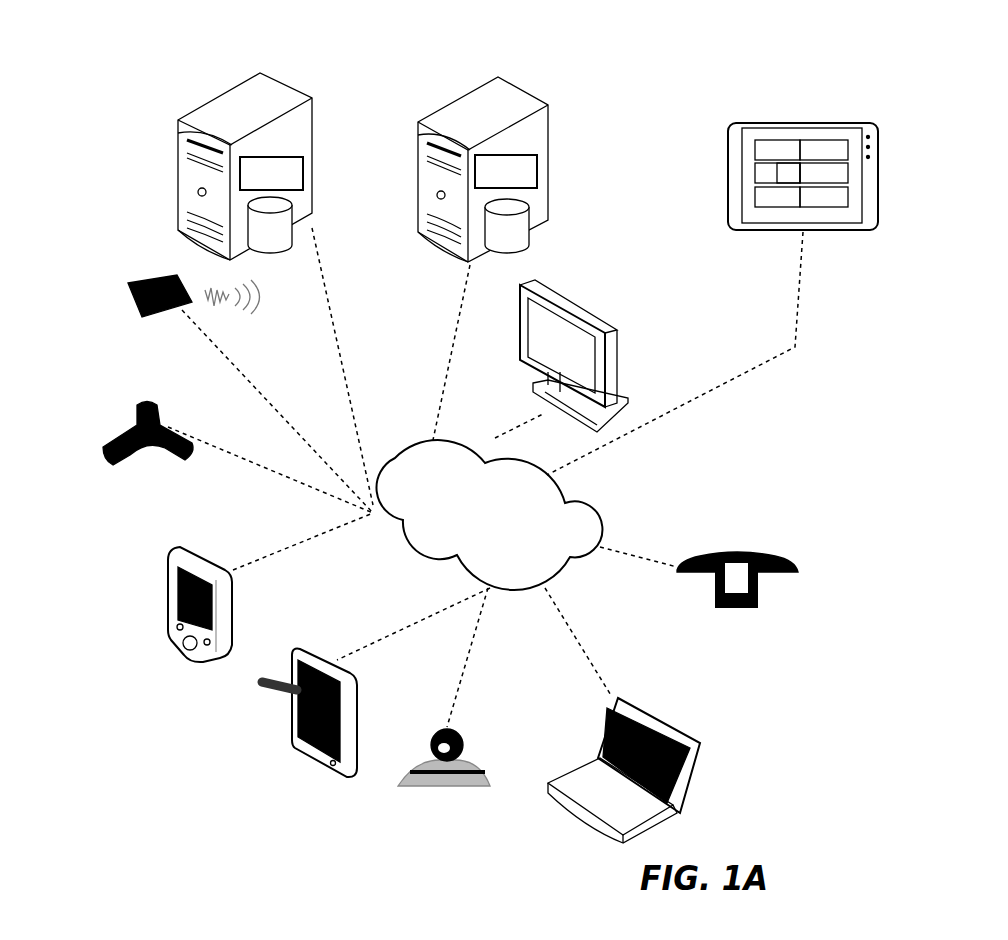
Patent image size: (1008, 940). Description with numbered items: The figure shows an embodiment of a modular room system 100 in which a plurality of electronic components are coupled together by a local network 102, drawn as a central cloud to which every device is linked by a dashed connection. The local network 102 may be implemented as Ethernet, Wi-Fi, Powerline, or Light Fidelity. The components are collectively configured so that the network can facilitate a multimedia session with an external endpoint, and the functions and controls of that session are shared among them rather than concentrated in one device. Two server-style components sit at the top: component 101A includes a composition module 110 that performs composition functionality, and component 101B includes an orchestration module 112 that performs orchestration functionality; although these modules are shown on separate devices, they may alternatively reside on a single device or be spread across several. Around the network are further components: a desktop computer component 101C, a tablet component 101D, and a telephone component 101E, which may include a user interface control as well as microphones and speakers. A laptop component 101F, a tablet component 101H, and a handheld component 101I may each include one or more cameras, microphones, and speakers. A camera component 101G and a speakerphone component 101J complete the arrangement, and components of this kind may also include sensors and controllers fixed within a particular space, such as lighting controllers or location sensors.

The modular room system 100 is at (474, 21).
The electronic component 101A is at (271, 144).
The electronic component 101B is at (536, 147).
The electronic component 101C is at (629, 346).
The electronic component 101D is at (811, 129).
The electronic component 101E is at (775, 518).
The electronic component 101F is at (665, 749).
The electronic component 101G is at (471, 794).
The electronic component 101H is at (286, 732).
The electronic component 101I is at (142, 447).
The electronic component 101J is at (100, 409).
The local network 102 is at (503, 524).
The composition module 110 is at (288, 187).
The orchestration module 112 is at (522, 185).